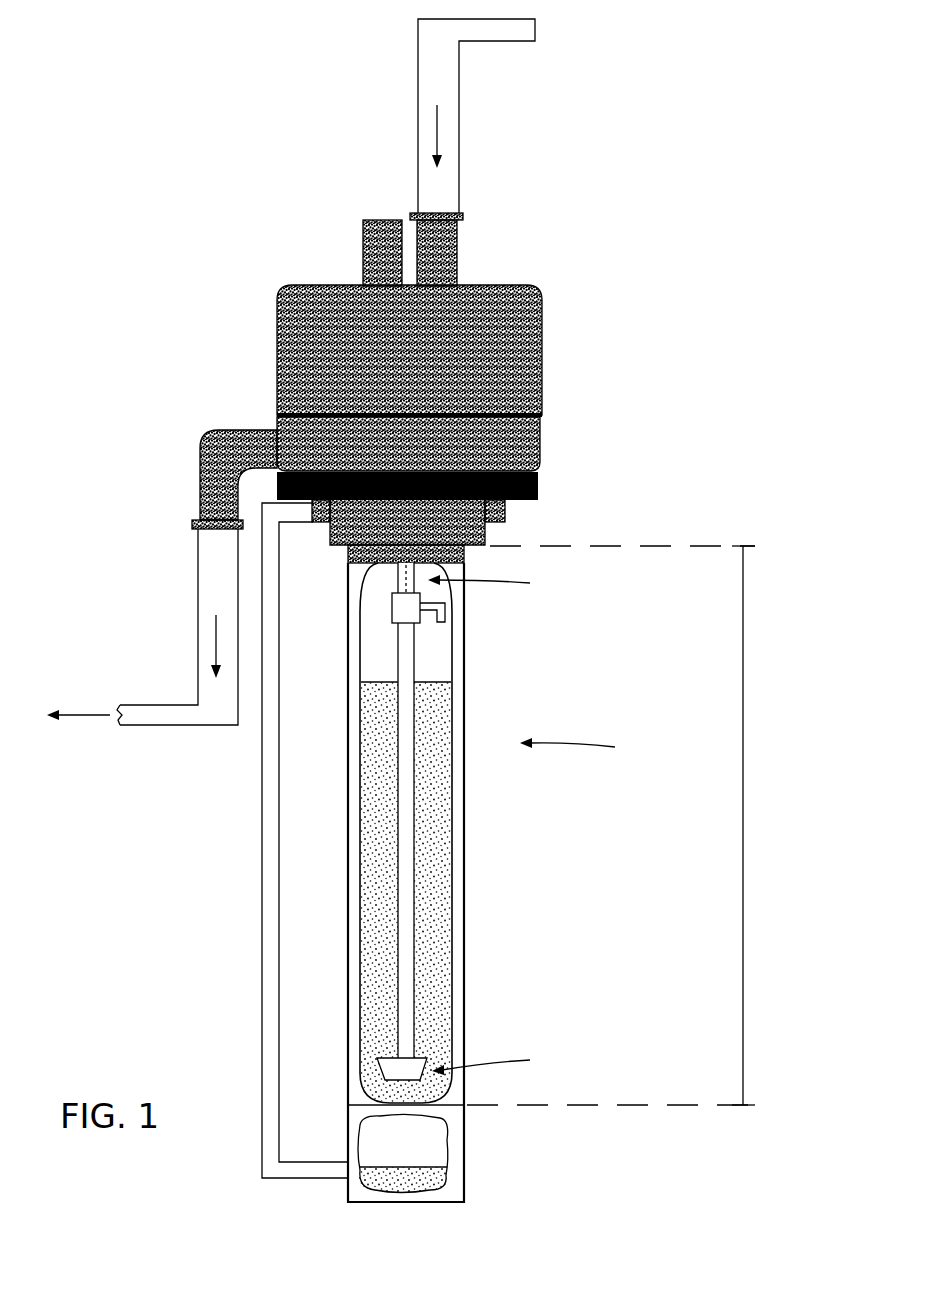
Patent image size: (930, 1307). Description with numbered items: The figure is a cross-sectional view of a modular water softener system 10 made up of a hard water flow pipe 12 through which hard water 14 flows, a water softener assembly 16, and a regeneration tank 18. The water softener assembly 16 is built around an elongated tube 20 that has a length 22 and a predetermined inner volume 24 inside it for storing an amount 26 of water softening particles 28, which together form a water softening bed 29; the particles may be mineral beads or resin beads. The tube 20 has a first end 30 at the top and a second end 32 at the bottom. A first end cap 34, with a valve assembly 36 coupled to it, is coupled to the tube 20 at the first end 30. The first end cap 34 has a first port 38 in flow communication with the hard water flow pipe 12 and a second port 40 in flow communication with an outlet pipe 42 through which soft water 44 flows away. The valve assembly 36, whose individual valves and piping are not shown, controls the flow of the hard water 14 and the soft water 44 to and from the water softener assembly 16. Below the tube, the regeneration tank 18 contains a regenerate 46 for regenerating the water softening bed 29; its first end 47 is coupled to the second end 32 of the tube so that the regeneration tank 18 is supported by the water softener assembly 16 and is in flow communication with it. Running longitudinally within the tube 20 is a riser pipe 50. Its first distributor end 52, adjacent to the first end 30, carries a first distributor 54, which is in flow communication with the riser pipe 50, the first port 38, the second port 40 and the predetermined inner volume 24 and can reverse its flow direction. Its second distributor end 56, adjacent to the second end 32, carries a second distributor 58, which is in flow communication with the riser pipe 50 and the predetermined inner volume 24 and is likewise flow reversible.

The modular water softener system 10 is at (603, 162).
The hard water flow pipe 12 is at (530, 32).
The hard water 14 is at (443, 119).
The water softener assembly 16 is at (587, 748).
The regeneration tank 18 is at (350, 1112).
The elongated tube 20 is at (458, 683).
The length 22 is at (743, 782).
The predetermined inner volume 24 is at (366, 642).
The amount of water softening particles 26 is at (370, 783).
The water softening particles 28 is at (368, 922).
The water softening bed 29 is at (430, 782).
The first end 30 is at (465, 553).
The second end 32 is at (455, 1103).
The first end cap 34 is at (478, 537).
The valve assembly 36 is at (542, 342).
The first port 38 is at (457, 240).
The second port 40 is at (200, 468).
The outlet pipe 42 is at (210, 555).
The soft water 44 is at (142, 651).
The regenerate 46 is at (433, 1177).
The first end of regeneration tank 47 is at (453, 1115).
The riser pipe 50 is at (408, 860).
The first distributor end 52 is at (484, 581).
The first distributor 54 is at (413, 598).
The second distributor end 56 is at (472, 1063).
The second distributor 58 is at (405, 1068).